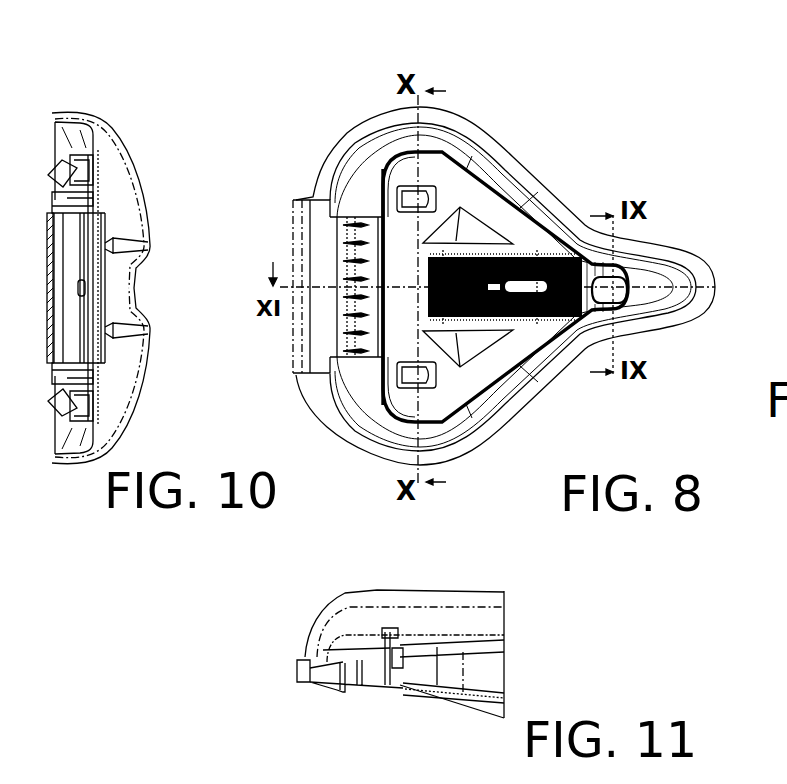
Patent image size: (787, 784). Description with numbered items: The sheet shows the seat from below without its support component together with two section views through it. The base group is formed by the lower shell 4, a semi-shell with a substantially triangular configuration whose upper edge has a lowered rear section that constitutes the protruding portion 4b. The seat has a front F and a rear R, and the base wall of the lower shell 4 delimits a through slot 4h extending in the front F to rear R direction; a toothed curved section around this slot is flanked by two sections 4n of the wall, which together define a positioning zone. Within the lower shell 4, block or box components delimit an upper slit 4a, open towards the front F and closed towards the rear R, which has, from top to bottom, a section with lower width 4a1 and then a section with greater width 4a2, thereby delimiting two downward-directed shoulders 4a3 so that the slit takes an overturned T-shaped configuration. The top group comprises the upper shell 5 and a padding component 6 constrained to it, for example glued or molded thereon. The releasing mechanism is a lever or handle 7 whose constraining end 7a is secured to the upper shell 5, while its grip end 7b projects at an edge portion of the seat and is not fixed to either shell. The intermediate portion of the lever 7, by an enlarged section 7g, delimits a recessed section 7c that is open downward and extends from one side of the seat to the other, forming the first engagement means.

In FIG. 8, the lower shell 4 is at (463, 393).
In FIG. 10, the upper slit 4a is at (62, 383).
In FIG. 10, the section with lower width 4a1 is at (93, 200).
In FIG. 10, the section with greater width 4a2 is at (55, 212).
In FIG. 10, the shoulders 4a3 is at (53, 205).
In FIG. 11, the protruding portion 4b is at (402, 660).
In FIG. 8, the through slot 4h is at (520, 285).
In FIG. 8, the sections of the base wall 4n is at (534, 258).
In FIG. 11, the sections of the base wall 4n is at (490, 693).
In FIG. 8, the upper shell 5 is at (378, 406).
In FIG. 8, the padding component 6 is at (690, 258).
In FIG. 8, the lever or handle 7 is at (312, 243).
In FIG. 11, the lever or handle 7 is at (340, 692).
In FIG. 11, the constraining end 7a is at (504, 650).
In FIG. 11, the grip end 7b is at (299, 670).
In FIG. 10, the recessed section 7c is at (104, 196).
In FIG. 11, the recessed section 7c is at (388, 660).
In FIG. 11, the enlarged section 7g is at (400, 648).
In FIG. 8, the rear R is at (295, 198).
In FIG. 8, the front F is at (716, 287).